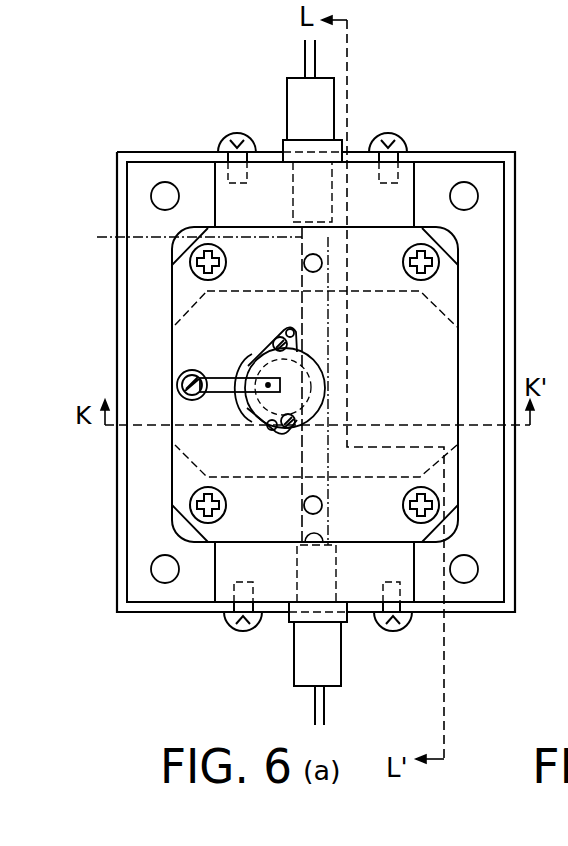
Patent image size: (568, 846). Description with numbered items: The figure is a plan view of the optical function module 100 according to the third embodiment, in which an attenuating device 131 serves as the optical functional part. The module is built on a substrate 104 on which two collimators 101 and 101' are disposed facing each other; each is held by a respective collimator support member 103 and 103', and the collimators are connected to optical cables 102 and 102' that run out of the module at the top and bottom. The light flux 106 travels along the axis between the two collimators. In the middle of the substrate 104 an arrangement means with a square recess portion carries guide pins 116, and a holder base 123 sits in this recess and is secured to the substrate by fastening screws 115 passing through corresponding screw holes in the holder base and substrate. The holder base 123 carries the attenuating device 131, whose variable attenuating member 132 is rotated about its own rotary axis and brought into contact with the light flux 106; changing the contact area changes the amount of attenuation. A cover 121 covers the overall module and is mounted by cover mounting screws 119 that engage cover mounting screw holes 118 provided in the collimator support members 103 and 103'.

The optical function module 100 is at (420, 66).
The collimator 101 is at (292, 667).
The collimator 101' is at (345, 110).
The optical cable 102 is at (341, 709).
The optical cable 102' is at (351, 53).
The collimator support member 103 is at (353, 600).
The collimator support member 103' is at (361, 178).
The substrate 104 is at (493, 372).
The light flux 106 is at (179, 236).
The fastening screws 115 is at (191, 266).
The guide pins 116 is at (305, 268).
The cover mounting screw holes 118 is at (225, 152).
The cover mounting screws 119 is at (238, 138).
The cover 121 is at (506, 335).
The holder base 123 is at (442, 348).
The attenuating device 131 is at (245, 408).
The variable attenuating member 132 is at (250, 358).